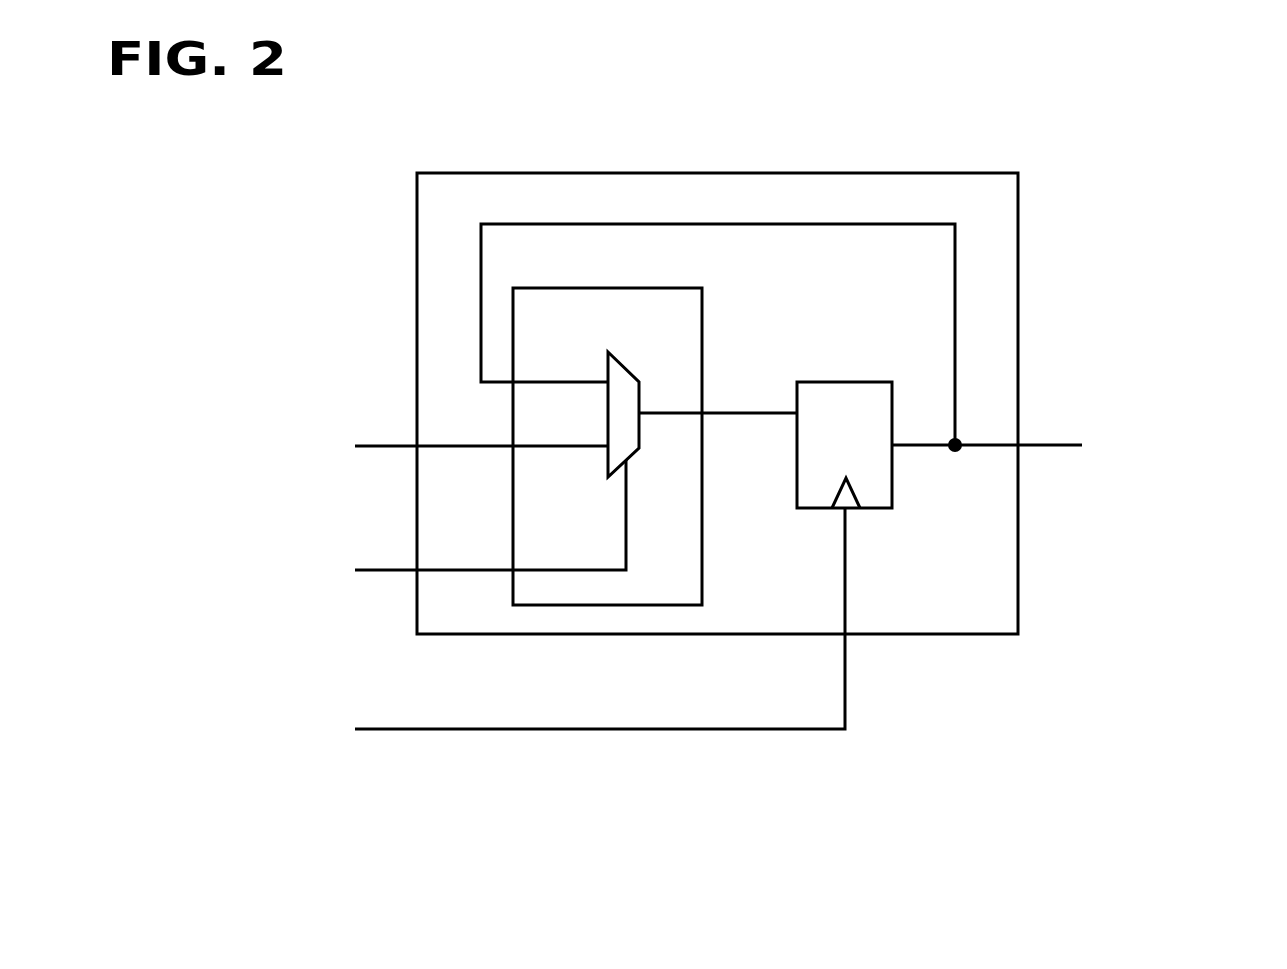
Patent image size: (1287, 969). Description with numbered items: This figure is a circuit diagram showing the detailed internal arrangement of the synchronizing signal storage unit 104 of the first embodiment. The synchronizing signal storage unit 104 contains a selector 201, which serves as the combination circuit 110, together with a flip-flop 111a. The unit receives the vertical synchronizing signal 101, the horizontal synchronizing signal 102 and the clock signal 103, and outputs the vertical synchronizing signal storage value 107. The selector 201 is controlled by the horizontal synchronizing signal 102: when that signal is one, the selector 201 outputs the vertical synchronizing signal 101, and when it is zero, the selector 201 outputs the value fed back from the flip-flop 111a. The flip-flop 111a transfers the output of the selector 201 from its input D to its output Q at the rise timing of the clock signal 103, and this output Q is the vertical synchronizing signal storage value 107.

The vertical synchronizing signal 101 is at (297, 402).
The horizontal synchronizing signal 102 is at (305, 608).
The clock signal 103 is at (272, 714).
The synchronizing signal storage unit 104 is at (497, 173).
The vertical synchronizing signal storage value 107 is at (1192, 383).
The combination circuit 110 is at (703, 330).
The flip-flop 111a is at (848, 381).
The selector 201 is at (625, 363).